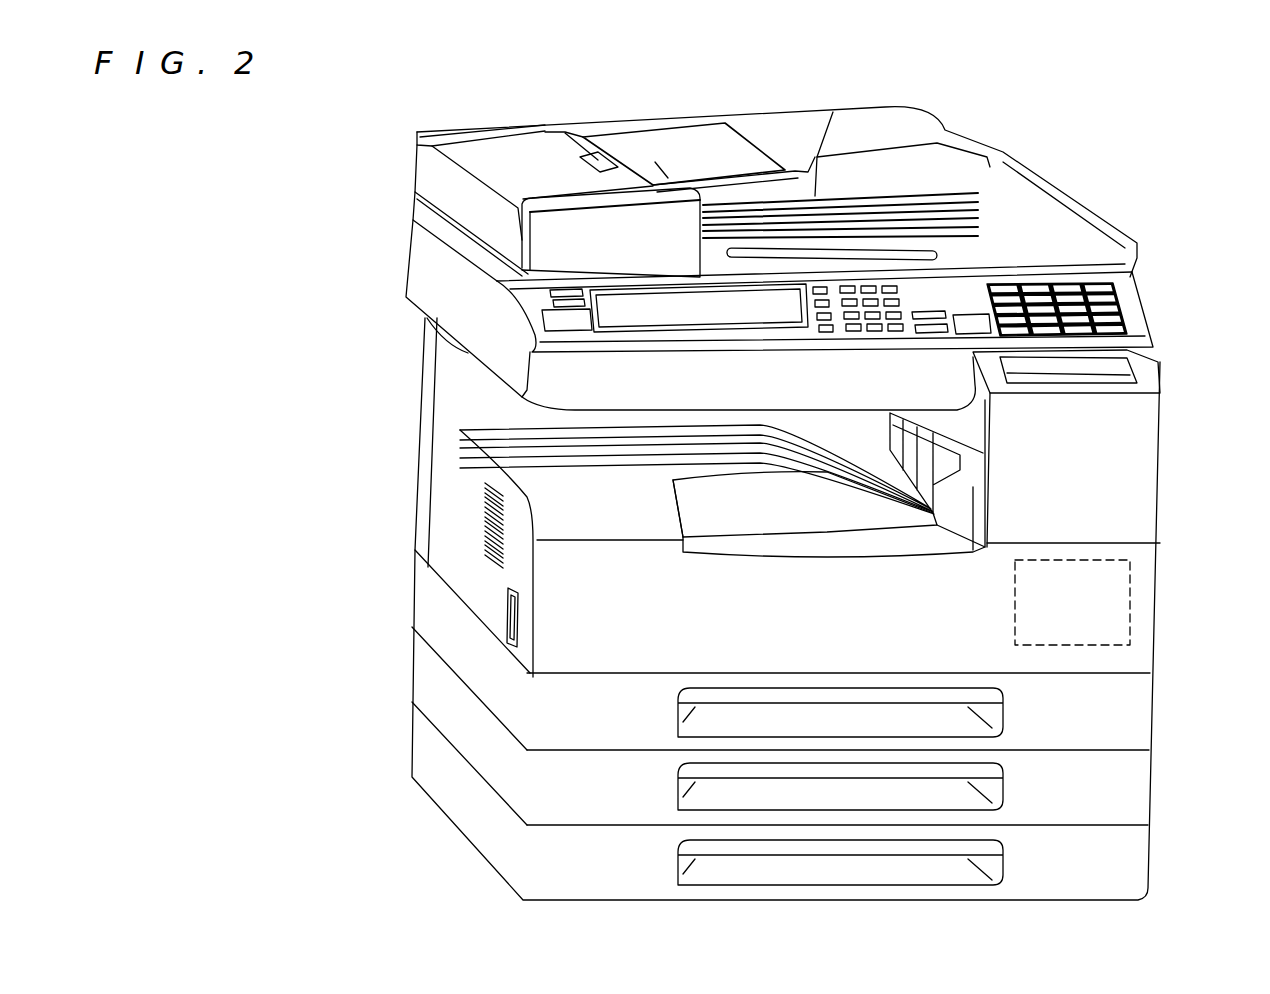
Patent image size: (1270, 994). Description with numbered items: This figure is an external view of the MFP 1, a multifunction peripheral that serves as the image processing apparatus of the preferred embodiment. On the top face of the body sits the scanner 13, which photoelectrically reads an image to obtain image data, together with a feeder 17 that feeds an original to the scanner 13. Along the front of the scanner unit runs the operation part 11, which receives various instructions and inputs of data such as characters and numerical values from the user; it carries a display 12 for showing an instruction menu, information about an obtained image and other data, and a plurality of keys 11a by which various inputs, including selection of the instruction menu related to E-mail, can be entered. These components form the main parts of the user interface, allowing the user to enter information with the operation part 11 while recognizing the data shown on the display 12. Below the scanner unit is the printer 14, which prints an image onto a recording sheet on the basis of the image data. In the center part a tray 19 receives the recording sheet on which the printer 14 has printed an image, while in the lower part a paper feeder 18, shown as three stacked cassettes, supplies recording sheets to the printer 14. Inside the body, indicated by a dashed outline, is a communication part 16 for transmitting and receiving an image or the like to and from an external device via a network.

The MFP 1 is at (284, 148).
The operation part 11 is at (925, 300).
The keys 11a is at (887, 322).
The display 12 is at (690, 316).
The scanner 13 is at (403, 182).
The printer 14 is at (1168, 545).
The communication part 16 is at (1013, 600).
The feeder 17 is at (640, 157).
The paper feeder 18 is at (493, 683).
The tray 19 is at (828, 472).